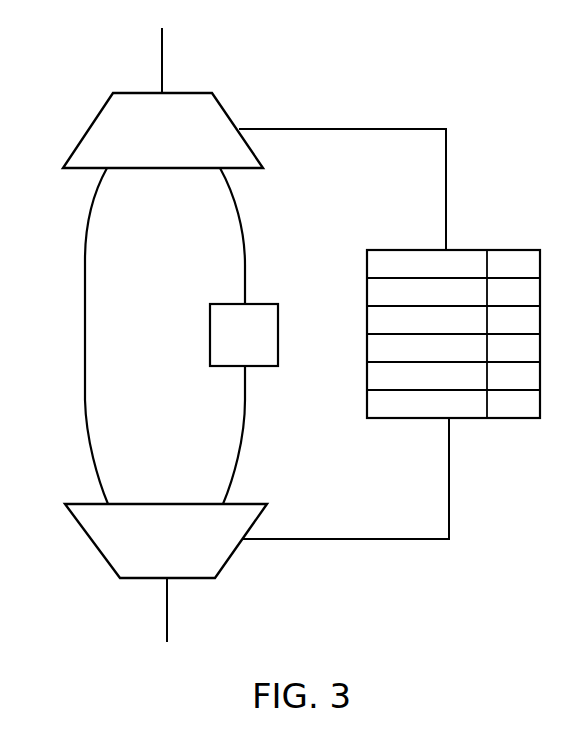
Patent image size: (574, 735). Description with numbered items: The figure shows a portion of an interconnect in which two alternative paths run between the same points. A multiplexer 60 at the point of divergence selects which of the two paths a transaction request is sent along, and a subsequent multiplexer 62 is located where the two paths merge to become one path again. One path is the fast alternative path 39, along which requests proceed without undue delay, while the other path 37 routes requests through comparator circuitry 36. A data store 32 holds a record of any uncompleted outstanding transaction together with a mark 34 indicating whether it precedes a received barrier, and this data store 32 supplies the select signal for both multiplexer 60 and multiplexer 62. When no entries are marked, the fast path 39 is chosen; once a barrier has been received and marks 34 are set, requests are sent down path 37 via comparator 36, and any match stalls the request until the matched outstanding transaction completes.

The multiplexer 60 is at (200, 118).
The subsequent multiplexer 62 is at (180, 565).
The alternative path 39 is at (83, 322).
The path 37 is at (223, 222).
The comparator circuitry 36 is at (258, 303).
The mark 34 is at (507, 248).
The data store 32 is at (456, 334).